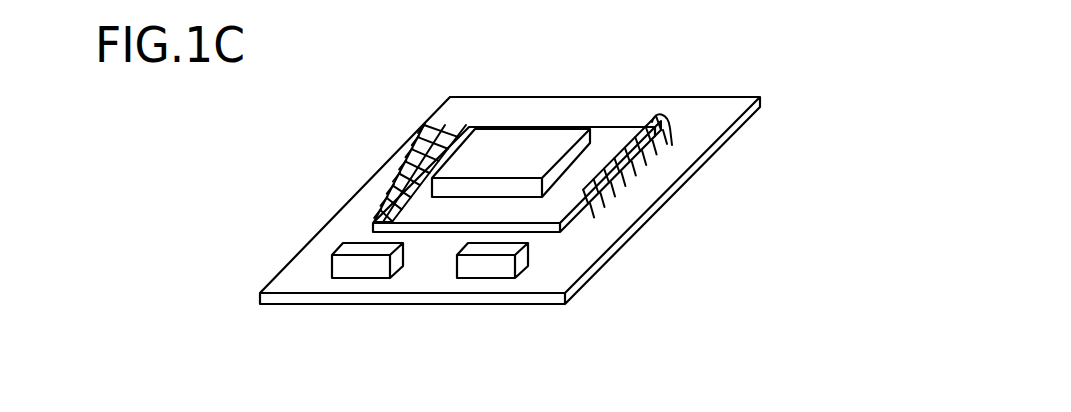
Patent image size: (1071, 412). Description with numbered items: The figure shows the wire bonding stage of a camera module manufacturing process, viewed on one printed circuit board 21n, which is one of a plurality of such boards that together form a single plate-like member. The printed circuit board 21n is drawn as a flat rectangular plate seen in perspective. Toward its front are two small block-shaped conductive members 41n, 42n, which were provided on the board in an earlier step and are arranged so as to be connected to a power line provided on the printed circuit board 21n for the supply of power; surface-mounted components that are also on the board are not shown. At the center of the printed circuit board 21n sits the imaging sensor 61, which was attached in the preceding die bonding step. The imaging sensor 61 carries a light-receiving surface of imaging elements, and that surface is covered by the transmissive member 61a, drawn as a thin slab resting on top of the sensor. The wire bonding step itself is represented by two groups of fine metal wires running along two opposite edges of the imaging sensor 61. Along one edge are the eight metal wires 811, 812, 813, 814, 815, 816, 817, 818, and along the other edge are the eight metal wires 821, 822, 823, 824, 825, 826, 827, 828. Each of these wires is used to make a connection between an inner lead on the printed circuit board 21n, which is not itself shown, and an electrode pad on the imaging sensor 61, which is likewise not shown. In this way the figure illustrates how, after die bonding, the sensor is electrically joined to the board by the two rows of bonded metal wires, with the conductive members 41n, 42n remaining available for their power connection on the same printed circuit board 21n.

The printed circuit board 21n is at (660, 108).
The imaging sensor 61 is at (603, 140).
The transmissive member 61a is at (498, 157).
The conductive member 41n is at (360, 268).
The conductive member 42n is at (483, 268).
The metal wire 811 is at (672, 143).
The metal wire 812 is at (659, 149).
The metal wire 813 is at (648, 160).
The metal wire 814 is at (638, 172).
The metal wire 815 is at (627, 185).
The metal wire 816 is at (616, 196).
The metal wire 817 is at (606, 207).
The metal wire 818 is at (597, 218).
The metal wire 821 is at (452, 123).
The metal wire 822 is at (443, 130).
The metal wire 823 is at (452, 136).
The metal wire 824 is at (420, 155).
The metal wire 825 is at (416, 170).
The metal wire 826 is at (396, 182).
The metal wire 827 is at (384, 196).
The metal wire 828 is at (376, 213).